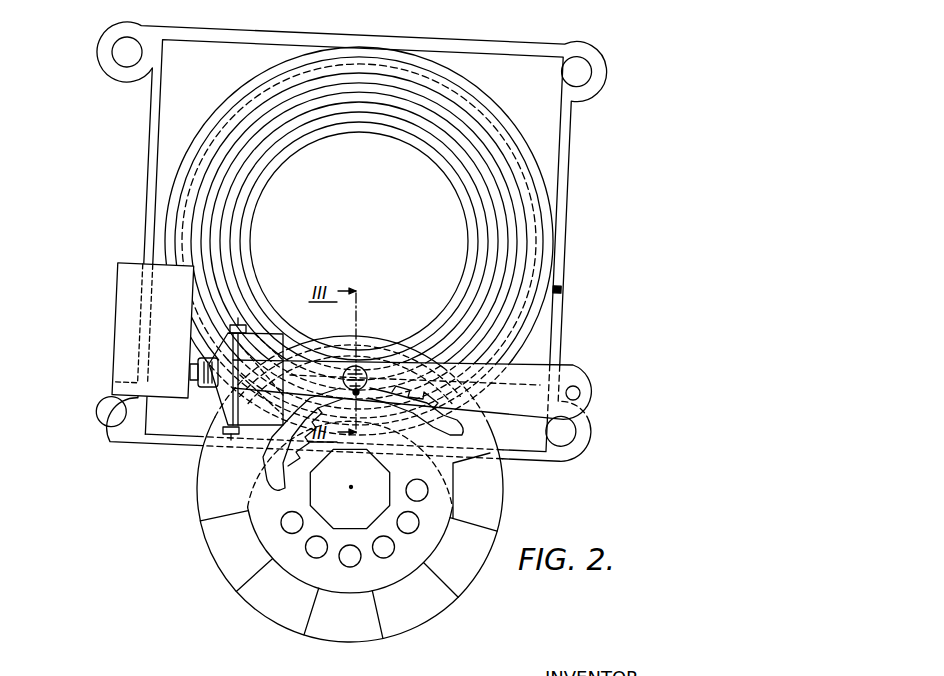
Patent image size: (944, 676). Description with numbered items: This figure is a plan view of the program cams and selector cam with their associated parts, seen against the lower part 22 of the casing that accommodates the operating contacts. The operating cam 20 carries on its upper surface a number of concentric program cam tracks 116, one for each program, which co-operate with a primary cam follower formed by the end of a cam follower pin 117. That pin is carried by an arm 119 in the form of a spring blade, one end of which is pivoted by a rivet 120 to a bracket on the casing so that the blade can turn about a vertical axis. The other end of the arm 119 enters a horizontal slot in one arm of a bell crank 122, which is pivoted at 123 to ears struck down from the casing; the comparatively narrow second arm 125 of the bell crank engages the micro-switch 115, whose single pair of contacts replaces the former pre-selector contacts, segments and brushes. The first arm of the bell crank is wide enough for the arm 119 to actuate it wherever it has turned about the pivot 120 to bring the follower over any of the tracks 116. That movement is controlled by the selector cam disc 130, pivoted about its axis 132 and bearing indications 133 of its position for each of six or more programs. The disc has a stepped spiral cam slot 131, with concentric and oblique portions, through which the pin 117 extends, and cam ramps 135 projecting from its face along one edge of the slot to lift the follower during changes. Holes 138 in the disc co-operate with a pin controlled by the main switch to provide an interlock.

The operating cam 20 is at (596, 256).
The lower part of casing 22 is at (563, 182).
The micro-switch 115 is at (132, 313).
The program cam tracks 116 is at (500, 312).
The cam follower pin 117 is at (360, 368).
The arm 119 is at (533, 377).
The rivet 120 is at (580, 393).
The bell crank 122 is at (262, 348).
The bell crank pivot 123 is at (226, 433).
The second arm of bell crank 125 is at (208, 390).
The selector cam disc 130 is at (215, 483).
The cam slot 131 is at (268, 470).
The axis of selector cam disc 132 is at (351, 487).
The indications 133 is at (270, 585).
The cam ramps 135 is at (420, 412).
The holes 138 is at (414, 528).